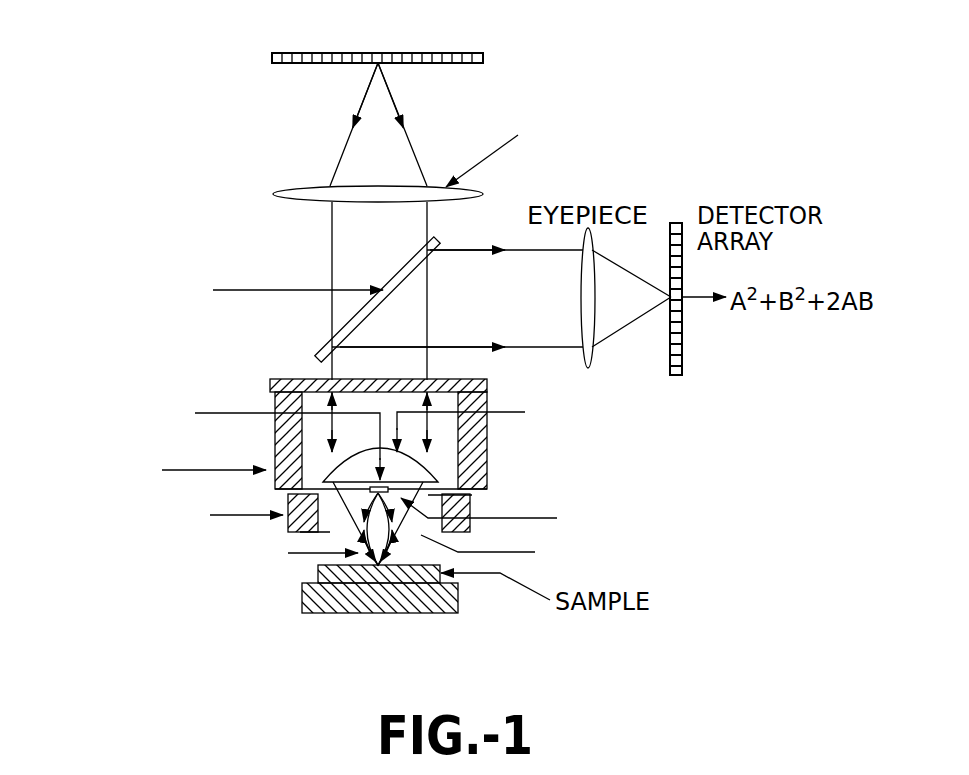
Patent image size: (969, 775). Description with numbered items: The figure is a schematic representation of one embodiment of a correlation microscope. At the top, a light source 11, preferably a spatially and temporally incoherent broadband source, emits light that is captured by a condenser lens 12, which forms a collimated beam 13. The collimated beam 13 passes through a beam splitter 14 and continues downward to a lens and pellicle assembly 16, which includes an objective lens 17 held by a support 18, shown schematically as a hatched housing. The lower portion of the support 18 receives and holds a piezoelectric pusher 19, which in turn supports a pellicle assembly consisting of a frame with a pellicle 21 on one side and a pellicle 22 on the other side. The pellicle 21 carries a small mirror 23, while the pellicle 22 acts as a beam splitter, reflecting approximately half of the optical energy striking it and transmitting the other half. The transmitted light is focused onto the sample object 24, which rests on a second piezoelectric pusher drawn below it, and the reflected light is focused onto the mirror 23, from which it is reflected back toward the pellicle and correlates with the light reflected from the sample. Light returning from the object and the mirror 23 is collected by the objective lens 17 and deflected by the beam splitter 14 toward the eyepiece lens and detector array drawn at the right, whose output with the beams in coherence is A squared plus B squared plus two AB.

The light source 11 is at (430, 63).
The condenser lens 12 is at (318, 190).
The collimated beam 13 is at (331, 253).
The beam splitter 14 is at (348, 327).
The lens and pellicle assembly 16 is at (341, 433).
The objective lens 17 is at (410, 468).
The support 18 is at (470, 380).
The piezoelectric pusher 19 is at (275, 443).
The pellicle 21 is at (433, 501).
The pellicle 22 is at (414, 537).
The mirror 23 is at (370, 482).
The sample object 24 is at (310, 578).